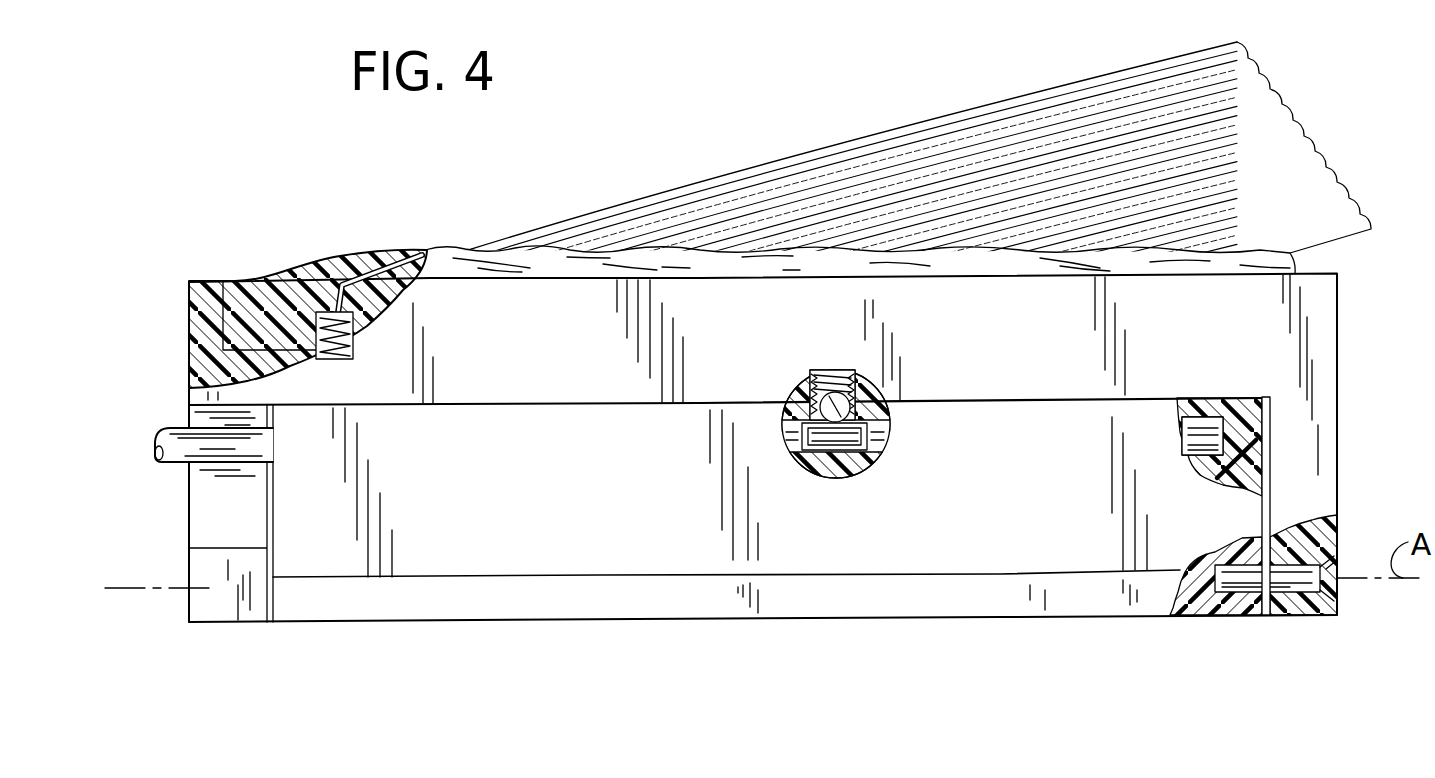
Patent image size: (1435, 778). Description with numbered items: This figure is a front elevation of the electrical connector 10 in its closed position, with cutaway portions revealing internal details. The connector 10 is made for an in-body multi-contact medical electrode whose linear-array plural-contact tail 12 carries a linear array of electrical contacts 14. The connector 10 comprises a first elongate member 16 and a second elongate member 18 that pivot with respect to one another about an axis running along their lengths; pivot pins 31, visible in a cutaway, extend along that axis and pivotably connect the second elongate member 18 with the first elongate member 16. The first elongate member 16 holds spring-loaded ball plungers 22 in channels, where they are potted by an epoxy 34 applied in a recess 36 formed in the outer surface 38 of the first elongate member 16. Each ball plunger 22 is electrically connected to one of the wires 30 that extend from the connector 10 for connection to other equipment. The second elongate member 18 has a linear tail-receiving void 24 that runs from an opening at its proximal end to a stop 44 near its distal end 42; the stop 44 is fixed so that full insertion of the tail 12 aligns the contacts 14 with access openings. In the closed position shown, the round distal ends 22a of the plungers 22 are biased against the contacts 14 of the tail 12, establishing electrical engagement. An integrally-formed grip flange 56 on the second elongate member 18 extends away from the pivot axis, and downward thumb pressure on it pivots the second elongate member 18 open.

The electrical connector 10 is at (1356, 325).
The linear-array plural-contact tail 12 is at (177, 430).
The electrical contacts 14 is at (828, 443).
The first elongate member 16 is at (1322, 466).
The second elongate member 18 is at (915, 540).
The spring-loaded ball plungers 22 is at (316, 330).
The round distal ends 22a is at (857, 378).
The linear tail-receiving void 24 is at (1222, 440).
The wires 30 is at (637, 212).
The pivot pins 31 is at (1297, 587).
The epoxy 34 is at (378, 260).
The recess 36 is at (247, 307).
The outer surface 38 is at (208, 282).
The distal end 42 is at (1267, 506).
The stop 44 is at (1213, 405).
The grip flange 56 is at (670, 608).